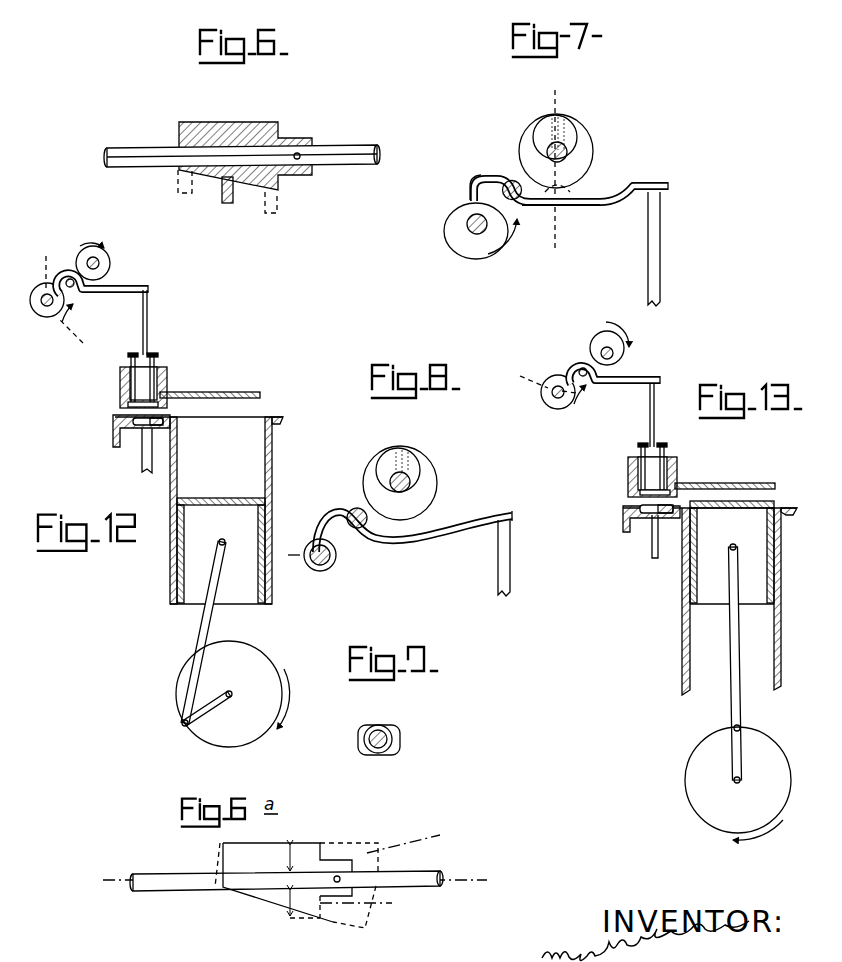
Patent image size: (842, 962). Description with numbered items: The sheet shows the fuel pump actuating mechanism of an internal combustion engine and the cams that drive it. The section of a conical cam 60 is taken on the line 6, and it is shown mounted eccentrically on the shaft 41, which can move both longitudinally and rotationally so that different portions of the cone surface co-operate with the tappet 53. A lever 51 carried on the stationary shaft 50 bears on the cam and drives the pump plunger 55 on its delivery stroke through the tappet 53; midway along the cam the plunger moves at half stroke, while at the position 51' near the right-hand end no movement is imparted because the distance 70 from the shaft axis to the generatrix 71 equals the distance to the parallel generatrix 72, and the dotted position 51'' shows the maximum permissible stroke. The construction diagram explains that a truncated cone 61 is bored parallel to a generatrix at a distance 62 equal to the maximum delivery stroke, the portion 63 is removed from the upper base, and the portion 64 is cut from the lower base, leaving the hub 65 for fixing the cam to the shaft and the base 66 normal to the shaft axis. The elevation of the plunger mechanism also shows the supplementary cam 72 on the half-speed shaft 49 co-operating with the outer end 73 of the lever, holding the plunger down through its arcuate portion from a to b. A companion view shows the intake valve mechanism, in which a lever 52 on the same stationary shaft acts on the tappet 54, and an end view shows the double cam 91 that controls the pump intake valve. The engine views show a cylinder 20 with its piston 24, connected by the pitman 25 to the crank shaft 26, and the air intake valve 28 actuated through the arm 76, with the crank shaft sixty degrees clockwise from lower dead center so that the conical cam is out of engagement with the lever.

In FIG. 7, the section line 6 is at (554, 172).
In FIG. 12, the cylinder 20 is at (179, 477).
In FIG. 13, the cylinder 20 is at (689, 651).
In FIG. 12, the piston 24 is at (215, 501).
In FIG. 13, the piston 24 is at (727, 510).
In FIG. 12, the pitman 25 is at (214, 622).
In FIG. 13, the pitman 25 is at (742, 681).
In FIG. 12, the crank shaft 26 is at (206, 706).
In FIG. 13, the crank shaft 26 is at (745, 777).
In FIG. 12, the air intake valve 28 is at (138, 428).
In FIG. 13, the air intake valve 28 is at (650, 517).
In FIG. 6, the shaft 41 is at (351, 162).
In FIG. 7, the shaft 41 is at (567, 151).
In FIG. 8, the shaft 41 is at (412, 479).
In FIG. 6A, the shaft 41 is at (428, 871).
In FIG. 7, the shaft 49 is at (467, 227).
In FIG. 8, the shaft 49 is at (316, 572).
In FIG. 9, the shaft 49 is at (373, 749).
In FIG. 7, the stationary shaft 50 is at (509, 180).
In FIG. 8, the stationary shaft 50 is at (348, 511).
In FIG. 12, the stationary shaft 50 is at (70, 283).
In FIG. 13, the stationary shaft 50 is at (583, 372).
In FIG. 6, the lever 51 is at (209, 200).
In FIG. 7, the lever 51 is at (571, 179).
In FIG. 12, the lever 51 is at (121, 276).
In FIG. 13, the lever 51 is at (621, 362).
In FIG. 6, the lever position 51' is at (256, 219).
In FIG. 6, the lever position 51'' is at (155, 193).
In FIG. 8, the lever 52 is at (467, 515).
In FIG. 7, the tappet 53 is at (662, 244).
In FIG. 8, the tappet 54 is at (512, 557).
In FIG. 12, the plunger 55 is at (148, 337).
In FIG. 13, the plunger 55 is at (656, 430).
In FIG. 6, the conical cam 60 is at (235, 121).
In FIG. 7, the conical cam 60 is at (577, 121).
In FIG. 8, the conical cam 60 is at (432, 466).
In FIG. 12, the conical cam 60 is at (108, 273).
In FIG. 13, the conical cam 60 is at (609, 333).
In FIG. 6A, the conical cam 60 is at (262, 853).
In FIG. 6A, the truncated cone 61 is at (379, 843).
In FIG. 6A, the distance 62 is at (228, 858).
In FIG. 6A, the removed portion 63 is at (218, 861).
In FIG. 6A, the cut-off portion 64 is at (405, 839).
In FIG. 6A, the hub 65 is at (345, 858).
In FIG. 6A, the base 66 is at (324, 853).
In FIG. 6A, the distance 70 is at (300, 903).
In FIG. 6A, the generatrix 71 is at (284, 904).
In FIG. 7, the supplementary cam 72 is at (480, 241).
In FIG. 12, the supplementary cam 72 is at (43, 318).
In FIG. 13, the supplementary cam 72 is at (555, 407).
In FIG. 6A, the supplementary cam 72 is at (300, 843).
In FIG. 7, the outer end 73 is at (468, 197).
In FIG. 12, the valve actuating arm 76 is at (160, 404).
In FIG. 13, the valve actuating arm 76 is at (675, 498).
In FIG. 9, the guide block 91 is at (358, 737).
In FIG. 12, the arcuate portion end a is at (45, 265).
In FIG. 13, the arcuate portion end a is at (539, 378).
In FIG. 12, the arcuate portion end b is at (75, 333).
In FIG. 13, the arcuate portion end b is at (588, 399).